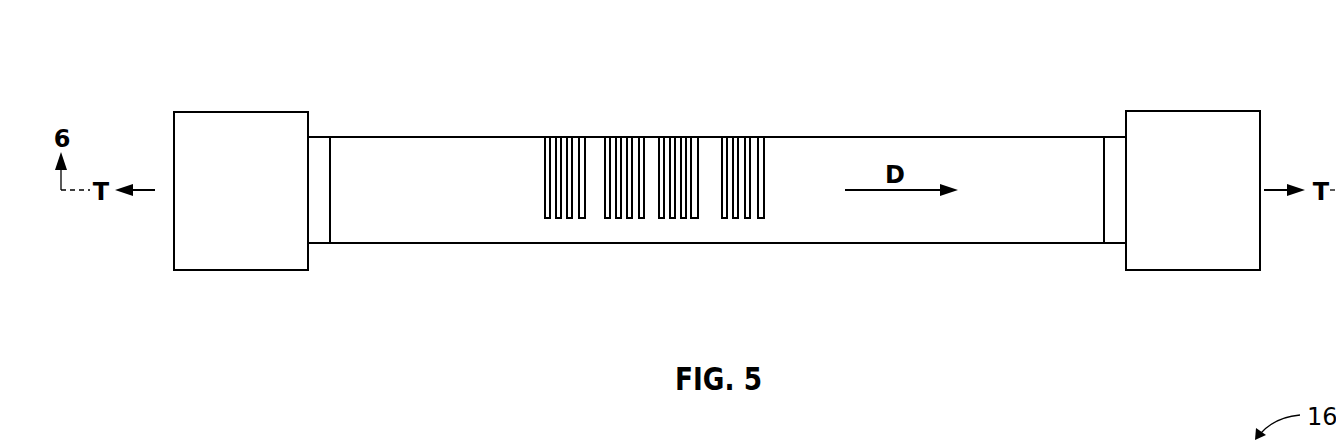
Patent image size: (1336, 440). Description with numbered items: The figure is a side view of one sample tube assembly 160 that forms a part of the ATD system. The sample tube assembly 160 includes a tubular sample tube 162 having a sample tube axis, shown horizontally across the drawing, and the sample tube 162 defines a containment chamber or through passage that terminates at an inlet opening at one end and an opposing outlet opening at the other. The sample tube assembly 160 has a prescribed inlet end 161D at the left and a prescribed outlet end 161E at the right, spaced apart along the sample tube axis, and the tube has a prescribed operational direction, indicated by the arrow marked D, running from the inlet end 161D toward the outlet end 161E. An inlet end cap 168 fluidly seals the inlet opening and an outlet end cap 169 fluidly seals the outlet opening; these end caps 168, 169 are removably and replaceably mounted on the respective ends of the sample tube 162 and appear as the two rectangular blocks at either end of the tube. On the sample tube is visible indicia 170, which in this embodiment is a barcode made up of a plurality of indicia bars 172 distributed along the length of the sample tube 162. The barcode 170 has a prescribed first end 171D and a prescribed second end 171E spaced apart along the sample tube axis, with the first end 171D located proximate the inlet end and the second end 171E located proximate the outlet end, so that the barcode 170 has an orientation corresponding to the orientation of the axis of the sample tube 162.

The sample tube assembly 160 is at (687, 24).
The inlet end 161D is at (287, 95).
The outlet end 161E is at (1140, 96).
The sample tube 162 is at (431, 148).
The inlet end cap 168 is at (195, 122).
The outlet end cap 169 is at (1208, 122).
The visible indicia 170 is at (543, 123).
The first end of the barcode 171D is at (532, 186).
The second end of the barcode 171E is at (784, 181).
The indicia bars 172 is at (581, 218).